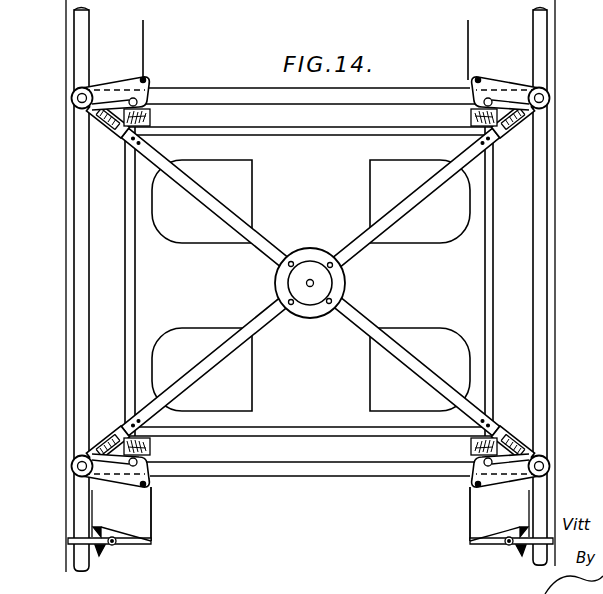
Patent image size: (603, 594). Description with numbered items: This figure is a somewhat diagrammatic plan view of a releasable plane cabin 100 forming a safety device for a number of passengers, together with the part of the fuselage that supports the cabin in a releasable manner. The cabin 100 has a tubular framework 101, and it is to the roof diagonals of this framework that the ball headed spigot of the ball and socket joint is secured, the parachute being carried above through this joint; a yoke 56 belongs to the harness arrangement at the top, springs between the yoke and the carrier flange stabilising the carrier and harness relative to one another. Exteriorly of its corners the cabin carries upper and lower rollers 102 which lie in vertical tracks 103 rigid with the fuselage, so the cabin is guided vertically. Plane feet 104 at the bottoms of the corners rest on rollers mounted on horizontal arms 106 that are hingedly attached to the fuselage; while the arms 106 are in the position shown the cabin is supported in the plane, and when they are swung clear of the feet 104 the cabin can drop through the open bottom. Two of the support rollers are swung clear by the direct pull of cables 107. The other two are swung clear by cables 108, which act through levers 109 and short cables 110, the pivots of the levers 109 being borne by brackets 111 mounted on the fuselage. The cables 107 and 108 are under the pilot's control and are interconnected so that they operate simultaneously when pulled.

The yoke 56 is at (336, 285).
The cabin 100 is at (480, 165).
The tubular framework 101 is at (308, 136).
The rollers 102 is at (100, 120).
The vertical tracks 103 is at (78, 113).
The plane feet 104 is at (475, 114).
The horizontal arms 106 is at (140, 86).
The cables 107 is at (143, 57).
The cables 108 is at (66, 235).
The levers 109 is at (132, 546).
The short cables 110 is at (152, 513).
The brackets 111 is at (100, 548).